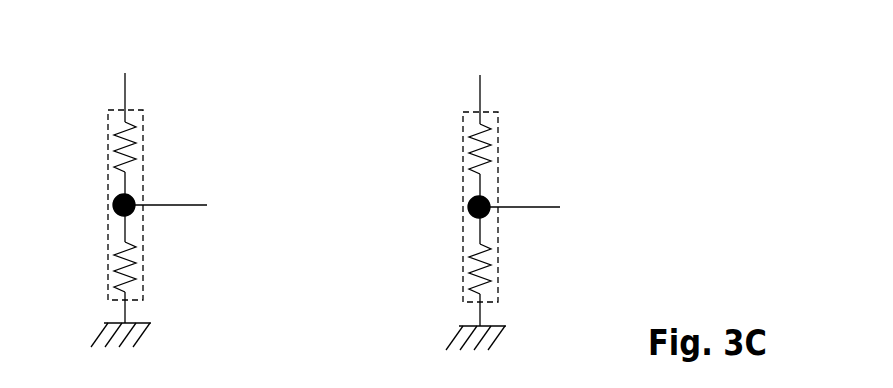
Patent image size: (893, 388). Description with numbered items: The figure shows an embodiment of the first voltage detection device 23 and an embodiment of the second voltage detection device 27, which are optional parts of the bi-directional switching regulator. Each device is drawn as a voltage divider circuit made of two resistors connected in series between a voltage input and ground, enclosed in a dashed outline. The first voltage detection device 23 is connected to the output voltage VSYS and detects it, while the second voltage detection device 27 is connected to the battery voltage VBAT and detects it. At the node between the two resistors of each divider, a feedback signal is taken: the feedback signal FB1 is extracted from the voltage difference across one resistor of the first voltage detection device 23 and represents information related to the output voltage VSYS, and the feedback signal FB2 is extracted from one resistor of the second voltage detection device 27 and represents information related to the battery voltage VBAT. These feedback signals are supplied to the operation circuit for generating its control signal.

The first voltage detection device 23 is at (142, 265).
The second voltage detection device 27 is at (498, 267).
The feedback signal FB1 is at (191, 207).
The feedback signal FB2 is at (547, 209).
The output voltage VSYS is at (112, 79).
The battery voltage VBAT is at (465, 80).